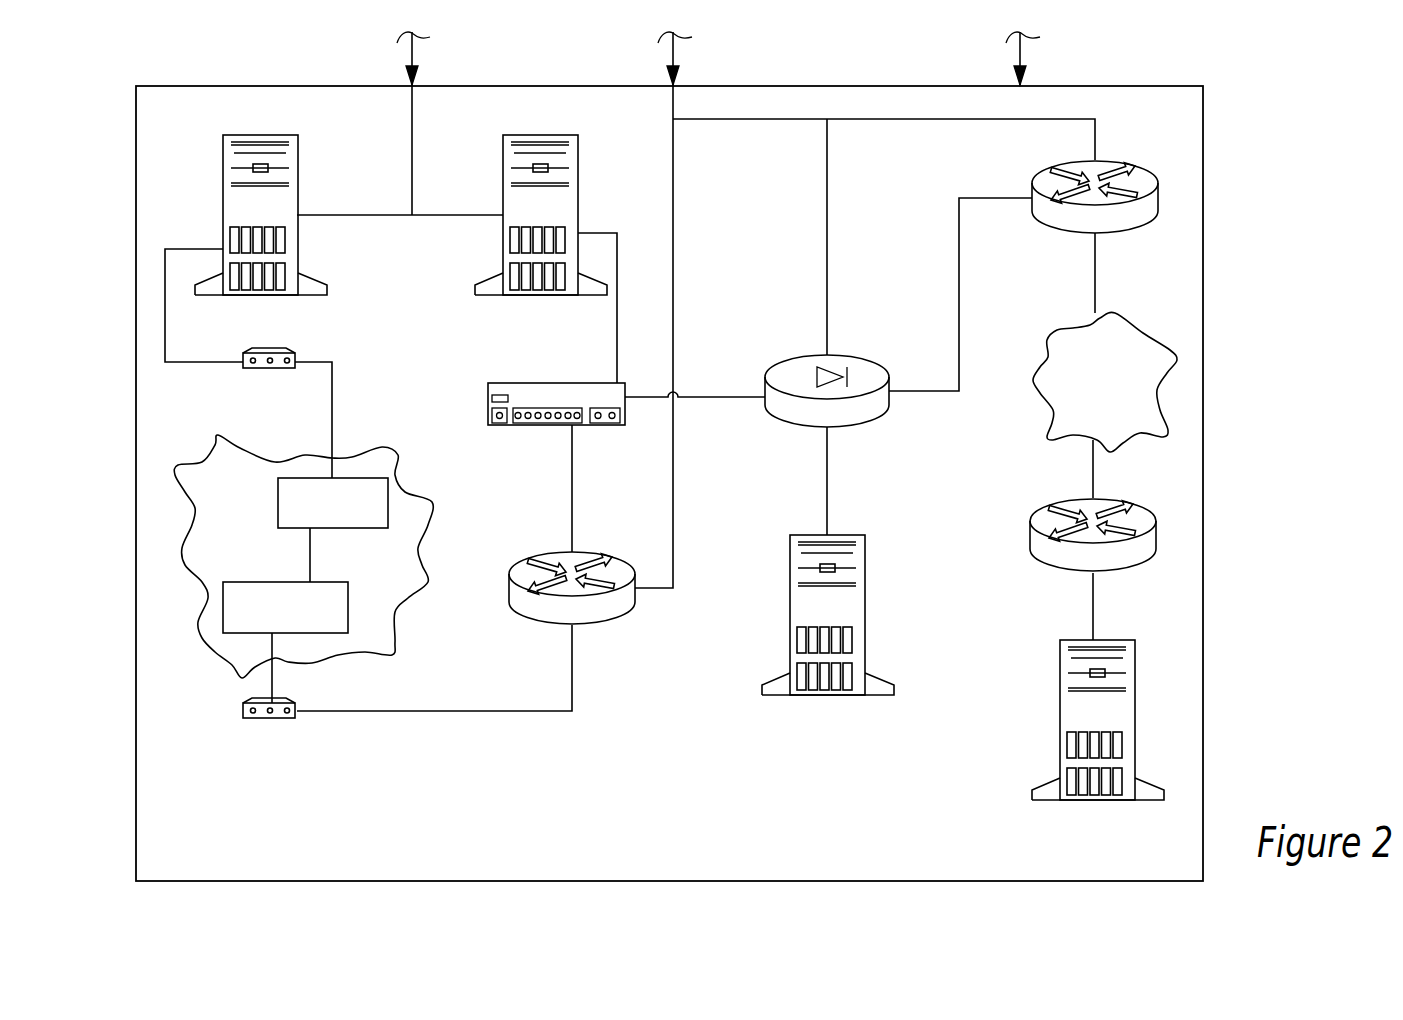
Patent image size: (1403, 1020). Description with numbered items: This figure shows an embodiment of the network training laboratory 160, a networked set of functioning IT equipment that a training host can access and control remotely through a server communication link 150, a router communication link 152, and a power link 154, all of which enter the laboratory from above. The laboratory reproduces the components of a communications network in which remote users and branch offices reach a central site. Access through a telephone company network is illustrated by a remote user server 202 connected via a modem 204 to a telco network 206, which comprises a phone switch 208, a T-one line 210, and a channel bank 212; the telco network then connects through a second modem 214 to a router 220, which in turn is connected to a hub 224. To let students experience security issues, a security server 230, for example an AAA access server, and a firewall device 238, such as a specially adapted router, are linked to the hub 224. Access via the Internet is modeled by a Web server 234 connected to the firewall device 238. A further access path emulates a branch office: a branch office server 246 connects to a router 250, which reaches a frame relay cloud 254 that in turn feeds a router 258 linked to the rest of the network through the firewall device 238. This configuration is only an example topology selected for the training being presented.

The server communication link 150 is at (410, 57).
The router communication link 152 is at (673, 60).
The power link 154 is at (1022, 57).
The network training laboratory 160 is at (385, 880).
The remote user server 202 is at (222, 167).
The modem 204 is at (295, 355).
The telco network 206 is at (350, 457).
The phone switch 208 is at (390, 518).
The T-1 line 210 is at (307, 570).
The channel bank 212 is at (348, 620).
The modem 214 is at (245, 706).
The router 220 is at (607, 623).
The hub 224 is at (488, 402).
The security server 230 is at (502, 177).
The Web server 234 is at (790, 608).
The firewall device 238 is at (782, 360).
The branch office server 246 is at (1060, 707).
The router 250 is at (1042, 510).
The frame relay cloud 254 is at (1042, 370).
The router 258 is at (1143, 167).